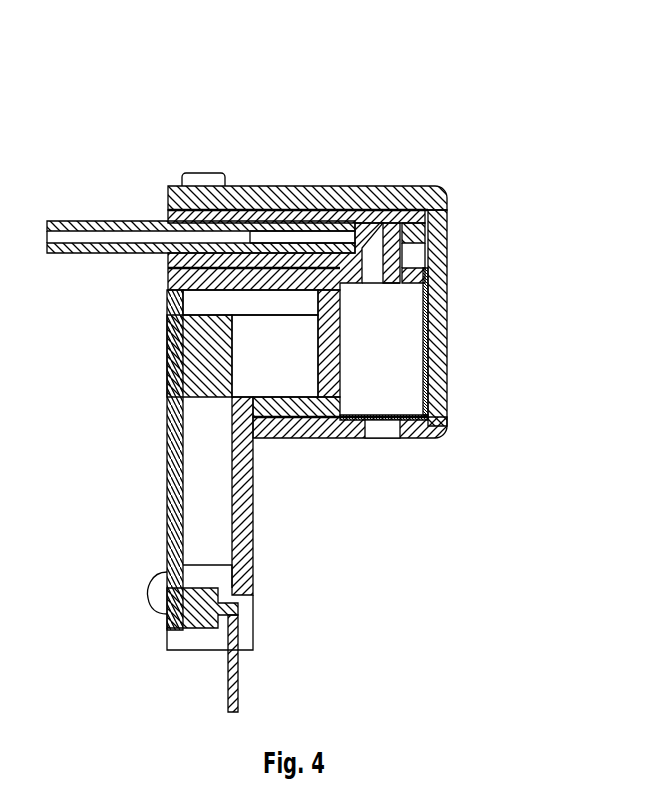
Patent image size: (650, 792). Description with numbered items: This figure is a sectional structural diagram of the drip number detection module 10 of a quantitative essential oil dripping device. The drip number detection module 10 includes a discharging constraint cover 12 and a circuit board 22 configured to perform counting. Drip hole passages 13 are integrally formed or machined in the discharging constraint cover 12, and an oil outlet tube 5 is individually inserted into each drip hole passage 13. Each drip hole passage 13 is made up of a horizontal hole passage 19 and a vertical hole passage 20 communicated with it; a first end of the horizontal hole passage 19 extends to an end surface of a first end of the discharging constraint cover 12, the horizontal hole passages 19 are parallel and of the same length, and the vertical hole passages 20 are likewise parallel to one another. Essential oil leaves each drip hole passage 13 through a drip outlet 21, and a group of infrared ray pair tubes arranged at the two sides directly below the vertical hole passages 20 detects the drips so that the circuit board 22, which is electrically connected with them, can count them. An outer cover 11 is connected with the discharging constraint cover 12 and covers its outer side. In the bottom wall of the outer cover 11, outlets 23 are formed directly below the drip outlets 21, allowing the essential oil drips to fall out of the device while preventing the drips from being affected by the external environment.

The oil outlet tube 5 is at (127, 221).
The drip number detection module 10 is at (365, 153).
The outer cover 11 is at (448, 275).
The discharging constraint cover 12 is at (300, 207).
The drip hole passage 13 is at (332, 242).
The horizontal hole passage 19 is at (275, 237).
The vertical hole passage 20 is at (370, 258).
The drip outlet 21 is at (372, 286).
The circuit board 22 is at (170, 460).
The outlet 23 is at (382, 440).